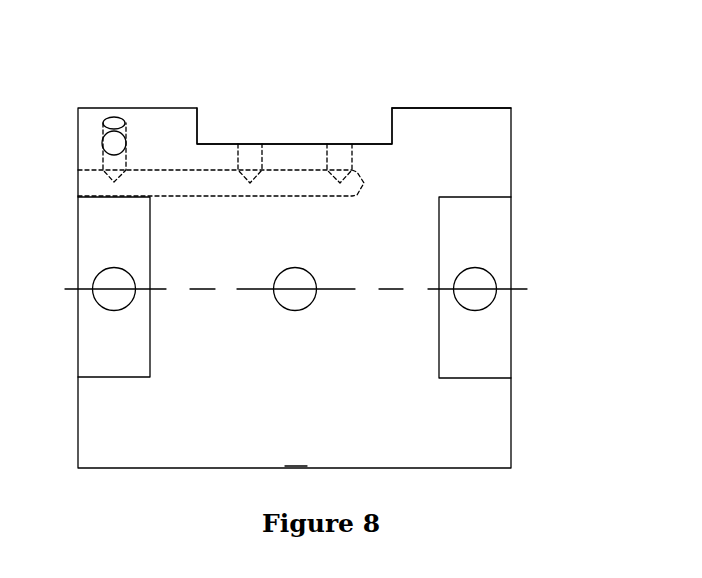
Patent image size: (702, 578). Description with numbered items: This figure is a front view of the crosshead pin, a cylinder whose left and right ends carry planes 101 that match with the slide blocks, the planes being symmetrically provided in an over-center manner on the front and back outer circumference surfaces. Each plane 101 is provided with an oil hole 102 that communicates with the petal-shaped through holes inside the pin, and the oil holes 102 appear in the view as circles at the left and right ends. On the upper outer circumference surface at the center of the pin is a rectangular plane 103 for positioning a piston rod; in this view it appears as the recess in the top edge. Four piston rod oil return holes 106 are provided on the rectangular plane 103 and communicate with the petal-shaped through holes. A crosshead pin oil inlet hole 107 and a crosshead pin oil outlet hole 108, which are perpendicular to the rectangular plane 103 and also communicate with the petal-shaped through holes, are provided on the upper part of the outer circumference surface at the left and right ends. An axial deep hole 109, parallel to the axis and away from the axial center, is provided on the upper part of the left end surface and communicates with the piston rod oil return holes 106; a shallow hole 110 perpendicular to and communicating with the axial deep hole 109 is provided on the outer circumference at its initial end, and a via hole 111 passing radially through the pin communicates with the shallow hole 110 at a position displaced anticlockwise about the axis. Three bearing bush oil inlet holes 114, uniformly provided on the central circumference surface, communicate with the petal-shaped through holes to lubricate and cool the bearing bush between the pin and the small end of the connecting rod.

The plane 101 is at (490, 347).
The oil hole 102 is at (477, 290).
The rectangular plane 103 is at (208, 144).
The piston rod oil return hole 106 is at (250, 148).
The crosshead pin oil inlet hole 107 is at (475, 109).
The crosshead pin oil outlet hole 108 is at (110, 110).
The axial deep hole 109 is at (304, 182).
The shallow hole 110 is at (110, 172).
The via hole 111 is at (112, 143).
The bearing bush oil inlet hole 114 is at (298, 292).